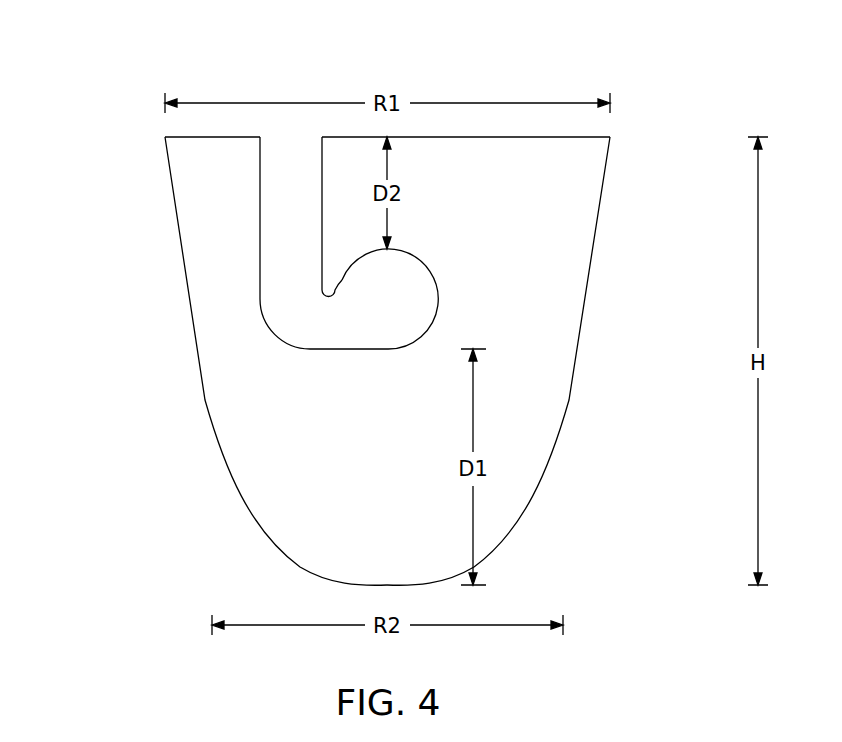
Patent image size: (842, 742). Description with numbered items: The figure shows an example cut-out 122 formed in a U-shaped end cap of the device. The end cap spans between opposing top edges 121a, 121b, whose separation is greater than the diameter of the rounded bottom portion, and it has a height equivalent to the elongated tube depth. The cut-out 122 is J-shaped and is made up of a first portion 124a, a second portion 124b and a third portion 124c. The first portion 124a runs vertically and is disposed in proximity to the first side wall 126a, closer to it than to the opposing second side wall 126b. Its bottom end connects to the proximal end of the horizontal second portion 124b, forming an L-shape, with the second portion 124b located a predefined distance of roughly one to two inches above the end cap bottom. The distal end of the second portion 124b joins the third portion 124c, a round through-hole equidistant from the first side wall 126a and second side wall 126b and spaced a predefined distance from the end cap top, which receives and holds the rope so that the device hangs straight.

The top edge 121a is at (165, 137).
The top edge 121b is at (610, 137).
The cut-out 122 is at (449, 323).
The first portion 124a is at (254, 349).
The second portion 124b is at (438, 392).
The third portion 124c is at (388, 300).
The first side wall 126a is at (197, 340).
The second side wall 126b is at (579, 340).